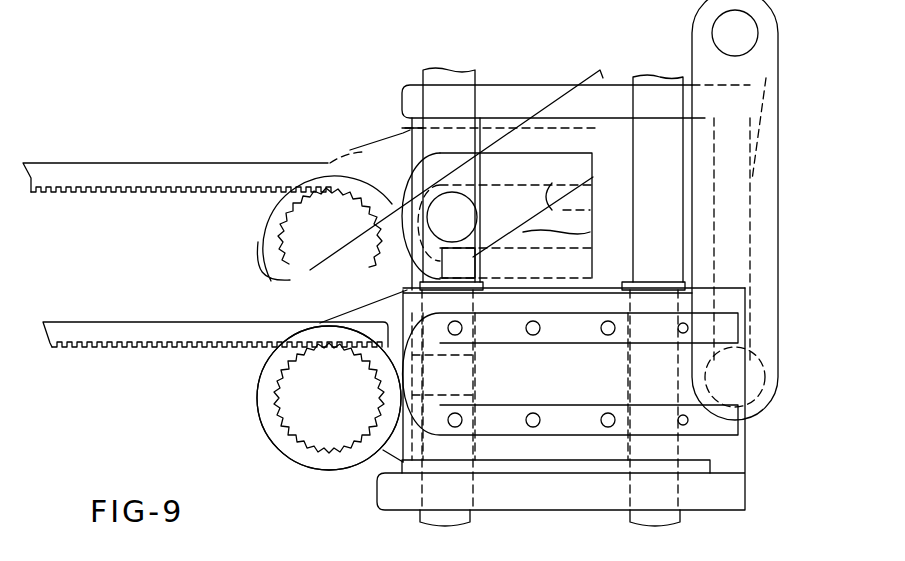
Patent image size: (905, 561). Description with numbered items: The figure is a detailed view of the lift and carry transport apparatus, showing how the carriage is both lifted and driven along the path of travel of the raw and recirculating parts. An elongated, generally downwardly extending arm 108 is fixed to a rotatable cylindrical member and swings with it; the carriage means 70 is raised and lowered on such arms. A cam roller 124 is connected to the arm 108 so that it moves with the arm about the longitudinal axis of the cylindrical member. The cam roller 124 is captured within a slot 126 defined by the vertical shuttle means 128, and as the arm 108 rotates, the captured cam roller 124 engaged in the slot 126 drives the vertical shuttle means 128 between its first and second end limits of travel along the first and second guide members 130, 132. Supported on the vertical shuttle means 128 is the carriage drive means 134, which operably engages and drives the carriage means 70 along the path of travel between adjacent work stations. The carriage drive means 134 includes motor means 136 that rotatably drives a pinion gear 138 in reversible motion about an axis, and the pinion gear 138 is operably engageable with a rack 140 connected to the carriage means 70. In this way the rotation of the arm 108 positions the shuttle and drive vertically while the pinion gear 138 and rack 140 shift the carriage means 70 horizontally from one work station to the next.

The carriage means 70 is at (108, 133).
The rack 140 is at (240, 135).
The elongated downwardly extending arm 108 is at (535, 112).
The cam roller 124 is at (603, 232).
The slot 126 is at (615, 204).
The vertical shuttle means 128 is at (350, 148).
The first guide member 130 is at (628, 150).
The second guide member 132 is at (488, 116).
The carriage drive means 134 is at (244, 378).
The motor means 136 is at (258, 413).
The pinion gear 138 is at (305, 445).